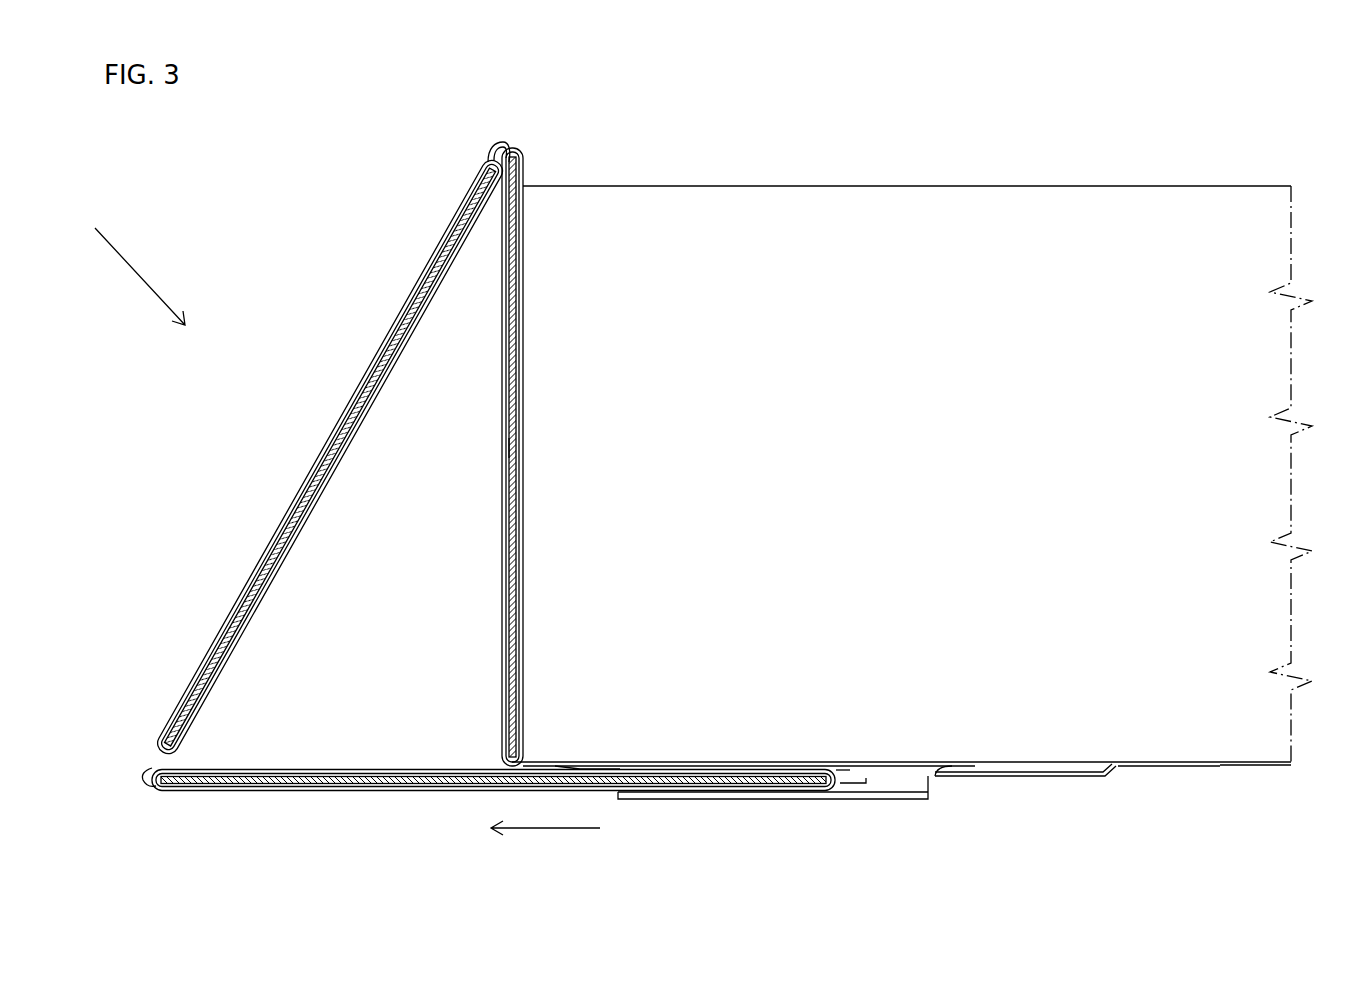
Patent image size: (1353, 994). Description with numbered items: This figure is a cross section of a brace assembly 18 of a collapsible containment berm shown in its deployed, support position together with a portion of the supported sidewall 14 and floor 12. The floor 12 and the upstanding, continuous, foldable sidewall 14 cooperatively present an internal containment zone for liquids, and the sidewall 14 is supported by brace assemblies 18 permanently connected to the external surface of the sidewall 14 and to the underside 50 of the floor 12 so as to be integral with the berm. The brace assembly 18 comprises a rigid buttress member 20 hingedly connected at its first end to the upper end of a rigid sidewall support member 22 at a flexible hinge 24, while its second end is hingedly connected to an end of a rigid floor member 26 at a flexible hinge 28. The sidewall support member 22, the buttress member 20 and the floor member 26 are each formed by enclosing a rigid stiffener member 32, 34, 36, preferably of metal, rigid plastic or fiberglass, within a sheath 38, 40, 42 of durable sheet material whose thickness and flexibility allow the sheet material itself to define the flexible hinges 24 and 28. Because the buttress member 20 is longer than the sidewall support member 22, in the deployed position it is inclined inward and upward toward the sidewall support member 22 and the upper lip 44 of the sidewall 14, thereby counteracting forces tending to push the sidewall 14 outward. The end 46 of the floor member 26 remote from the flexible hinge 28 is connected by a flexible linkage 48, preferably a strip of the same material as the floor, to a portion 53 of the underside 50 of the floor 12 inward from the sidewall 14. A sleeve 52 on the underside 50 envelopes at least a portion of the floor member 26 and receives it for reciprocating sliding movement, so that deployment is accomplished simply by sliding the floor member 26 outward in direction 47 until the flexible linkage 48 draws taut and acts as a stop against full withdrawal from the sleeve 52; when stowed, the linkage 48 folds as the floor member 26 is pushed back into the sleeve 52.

The floor 12 is at (692, 762).
The sidewall 14 is at (516, 457).
The brace assembly 18 is at (120, 265).
The buttress member 20 is at (359, 473).
The sidewall support member 22 is at (468, 457).
The flexible hinge 24 is at (516, 152).
The floor member 26 is at (509, 802).
The flexible hinge 28 is at (147, 770).
The rigid stiffener member 32 is at (553, 457).
The rigid stiffener member 34 is at (420, 292).
The rigid stiffener member 36 is at (493, 780).
The sheath 38 is at (463, 462).
The sheath 40 is at (369, 479).
The sheath 42 is at (493, 780).
The upper lip 44 is at (610, 187).
The end of the floor member 46 is at (838, 775).
The direction 47 is at (527, 832).
The flexible linkage 48 is at (1010, 778).
The underside of the floor 50 is at (1267, 766).
The sleeve 52 is at (842, 795).
The portion of the underside 53 is at (1170, 770).